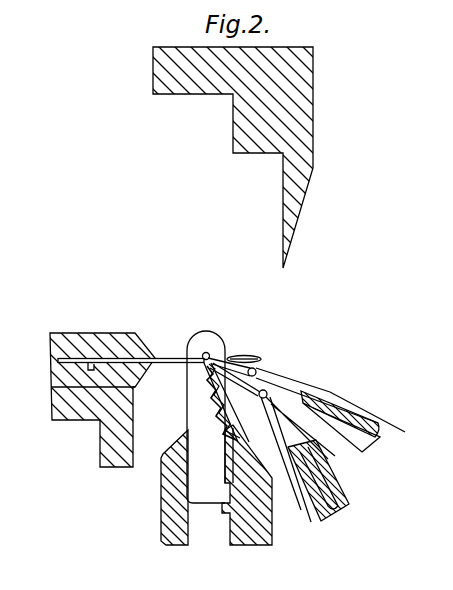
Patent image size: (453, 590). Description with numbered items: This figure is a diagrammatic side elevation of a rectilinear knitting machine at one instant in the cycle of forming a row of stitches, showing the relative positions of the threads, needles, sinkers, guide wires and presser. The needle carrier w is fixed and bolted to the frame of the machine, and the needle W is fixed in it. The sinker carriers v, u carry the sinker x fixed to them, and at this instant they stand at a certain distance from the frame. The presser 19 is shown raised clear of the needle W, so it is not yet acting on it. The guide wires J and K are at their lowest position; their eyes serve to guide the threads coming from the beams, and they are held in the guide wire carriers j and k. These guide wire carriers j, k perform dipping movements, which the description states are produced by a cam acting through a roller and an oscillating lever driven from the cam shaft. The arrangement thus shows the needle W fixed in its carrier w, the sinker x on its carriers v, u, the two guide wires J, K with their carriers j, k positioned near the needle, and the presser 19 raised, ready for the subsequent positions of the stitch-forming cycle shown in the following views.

The presser 19 is at (297, 115).
The needle carrier w is at (73, 340).
The needle W is at (165, 357).
The sinker x is at (202, 337).
The guide wire J is at (265, 381).
The guide wire K is at (281, 419).
The guide wire carrier j is at (343, 407).
The sinker carrier v is at (168, 521).
The sinker carrier u is at (252, 522).
The guide wire carrier k is at (320, 508).